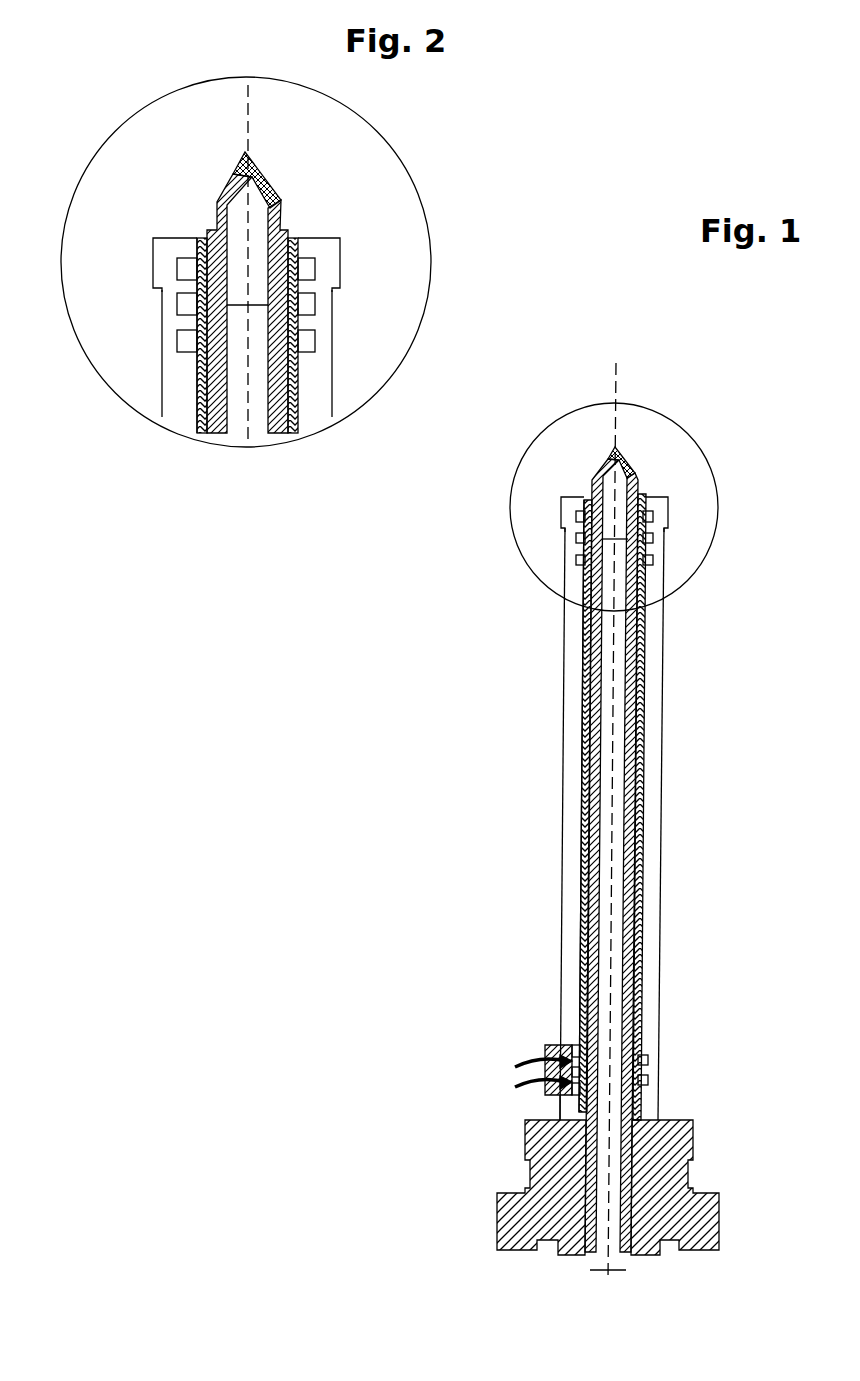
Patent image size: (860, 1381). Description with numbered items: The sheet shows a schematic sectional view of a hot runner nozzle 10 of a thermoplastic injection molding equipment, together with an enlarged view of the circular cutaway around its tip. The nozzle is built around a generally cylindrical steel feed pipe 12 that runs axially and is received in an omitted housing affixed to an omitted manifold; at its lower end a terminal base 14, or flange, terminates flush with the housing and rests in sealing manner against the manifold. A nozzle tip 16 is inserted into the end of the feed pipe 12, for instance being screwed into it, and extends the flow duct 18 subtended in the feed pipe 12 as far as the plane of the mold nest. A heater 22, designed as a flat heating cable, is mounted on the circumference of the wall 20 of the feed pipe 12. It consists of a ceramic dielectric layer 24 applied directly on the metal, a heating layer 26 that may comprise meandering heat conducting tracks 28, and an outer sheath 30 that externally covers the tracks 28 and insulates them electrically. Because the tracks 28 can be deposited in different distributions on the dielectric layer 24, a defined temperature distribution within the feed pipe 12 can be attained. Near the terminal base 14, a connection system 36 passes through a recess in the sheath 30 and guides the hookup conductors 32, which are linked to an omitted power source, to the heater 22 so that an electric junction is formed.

In FIG. 1, the hot runner nozzle 10 is at (575, 442).
In FIG. 2, the hot runner nozzle 10 is at (300, 208).
In FIG. 1, the feed pipe 12 is at (643, 703).
In FIG. 2, the feed pipe 12 is at (207, 432).
In FIG. 1, the terminal base 14 is at (498, 1218).
In FIG. 1, the nozzle tip 16 is at (630, 470).
In FIG. 2, the nozzle tip 16 is at (236, 170).
In FIG. 1, the flow duct 18 is at (615, 727).
In FIG. 2, the flow duct 18 is at (247, 413).
In FIG. 1, the wall 20 is at (611, 855).
In FIG. 2, the wall 20 is at (197, 363).
In FIG. 2, the heater 22 is at (322, 303).
In FIG. 1, the ceramic dielectric layer 24 is at (642, 647).
In FIG. 2, the ceramic dielectric layer 24 is at (197, 413).
In FIG. 1, the heating layer 26 is at (654, 562).
In FIG. 2, the heating layer 26 is at (160, 267).
In FIG. 1, the heat conducting tracks 28 is at (654, 537).
In FIG. 2, the heat conducting tracks 28 is at (315, 268).
In FIG. 1, the outer sheath 30 is at (655, 842).
In FIG. 2, the outer sheath 30 is at (312, 380).
In FIG. 1, the hookup conductors 32 is at (515, 1085).
In FIG. 1, the connection system 36 is at (523, 1102).